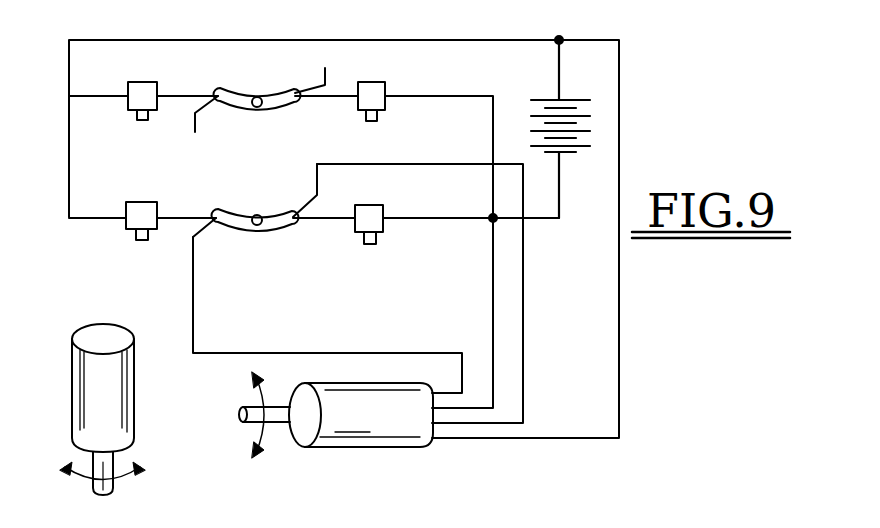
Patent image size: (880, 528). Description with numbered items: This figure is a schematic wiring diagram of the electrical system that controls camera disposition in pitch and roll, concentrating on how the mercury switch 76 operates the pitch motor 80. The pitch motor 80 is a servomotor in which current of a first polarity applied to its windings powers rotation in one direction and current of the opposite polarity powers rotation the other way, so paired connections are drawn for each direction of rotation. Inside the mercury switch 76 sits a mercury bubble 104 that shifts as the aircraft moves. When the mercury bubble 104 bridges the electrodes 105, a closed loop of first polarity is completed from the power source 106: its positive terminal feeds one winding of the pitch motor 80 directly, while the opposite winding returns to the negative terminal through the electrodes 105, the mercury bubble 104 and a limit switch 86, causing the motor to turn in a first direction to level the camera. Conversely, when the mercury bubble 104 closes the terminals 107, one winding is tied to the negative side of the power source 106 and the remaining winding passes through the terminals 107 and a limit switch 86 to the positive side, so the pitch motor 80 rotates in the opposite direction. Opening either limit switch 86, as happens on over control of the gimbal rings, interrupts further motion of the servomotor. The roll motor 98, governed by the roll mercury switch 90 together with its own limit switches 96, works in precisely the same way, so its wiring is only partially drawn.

The limit switch 96 is at (141, 91).
The roll mercury switch 90 is at (267, 100).
The power source 106 is at (607, 84).
The limit switch 86 is at (138, 211).
The mercury bubble 104 is at (252, 216).
The electrodes 105 is at (308, 218).
The terminals 107 is at (200, 230).
The mercury switch 76 is at (277, 224).
The roll motor 98 is at (112, 402).
The pitch motor 80 is at (380, 427).